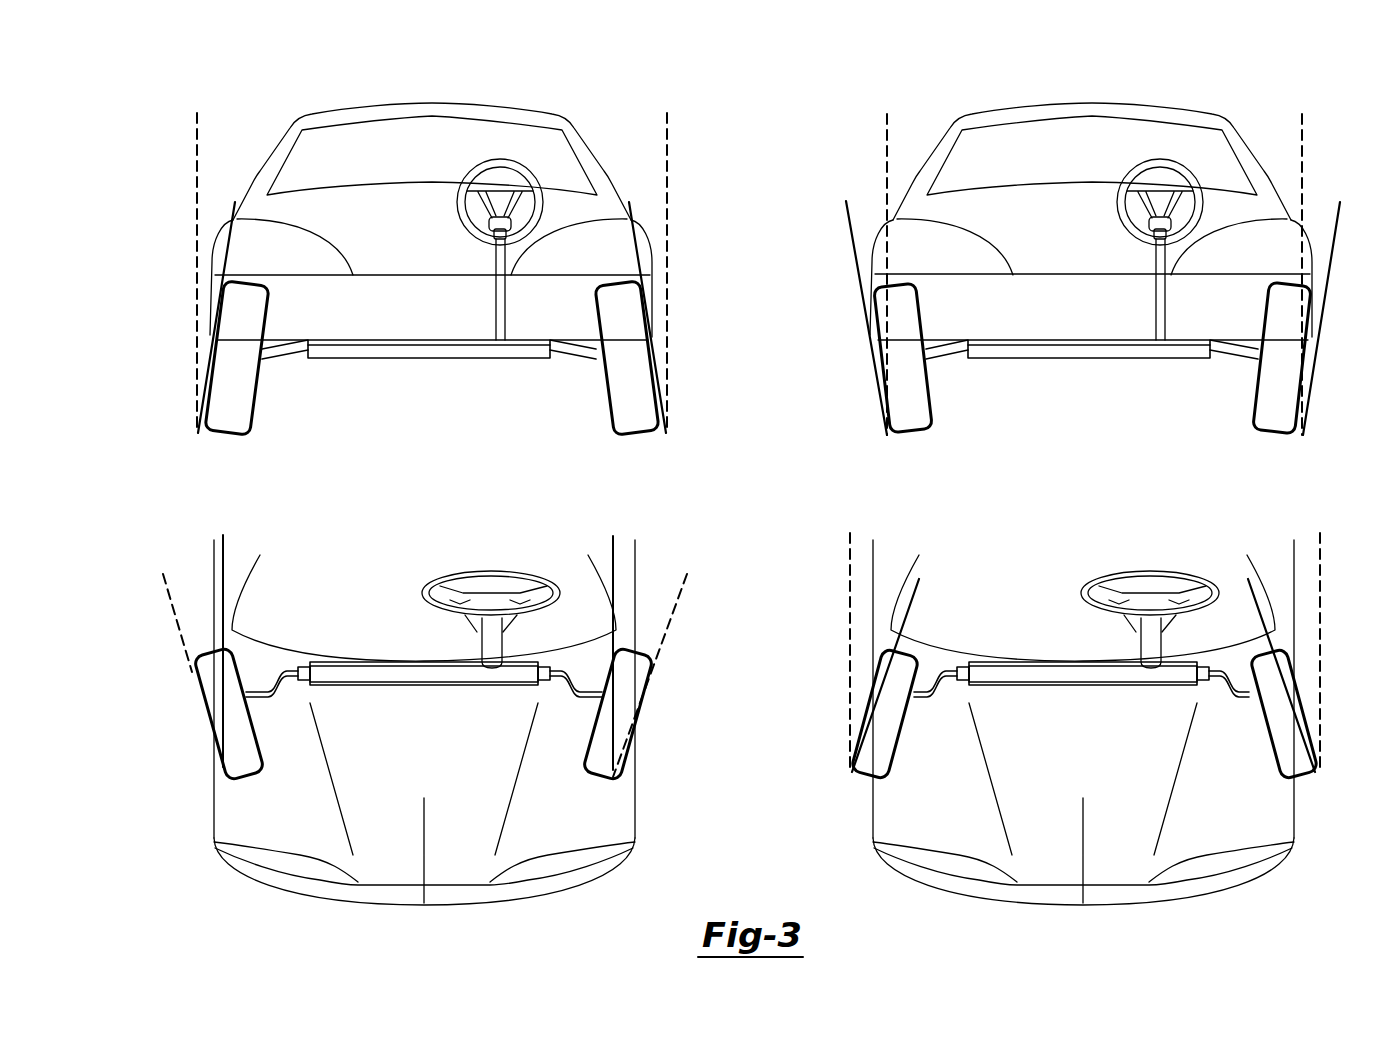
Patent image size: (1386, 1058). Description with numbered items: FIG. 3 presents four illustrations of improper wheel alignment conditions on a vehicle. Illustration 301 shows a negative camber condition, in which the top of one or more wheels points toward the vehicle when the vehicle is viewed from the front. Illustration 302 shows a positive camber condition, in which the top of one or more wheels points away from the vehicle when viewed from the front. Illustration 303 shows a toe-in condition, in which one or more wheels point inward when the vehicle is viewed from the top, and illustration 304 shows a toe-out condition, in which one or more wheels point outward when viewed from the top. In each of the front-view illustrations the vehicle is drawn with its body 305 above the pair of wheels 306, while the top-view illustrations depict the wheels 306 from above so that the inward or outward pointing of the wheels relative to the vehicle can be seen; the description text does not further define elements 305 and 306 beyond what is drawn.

The illustration of negative camber condition 301 is at (276, 98).
The illustration of positive camber condition 302 is at (936, 98).
The illustration of toe-in condition 303 is at (274, 508).
The illustration of toe-out condition 304 is at (936, 508).
The vehicle body 305 is at (432, 103).
The wheel 306 is at (262, 411).